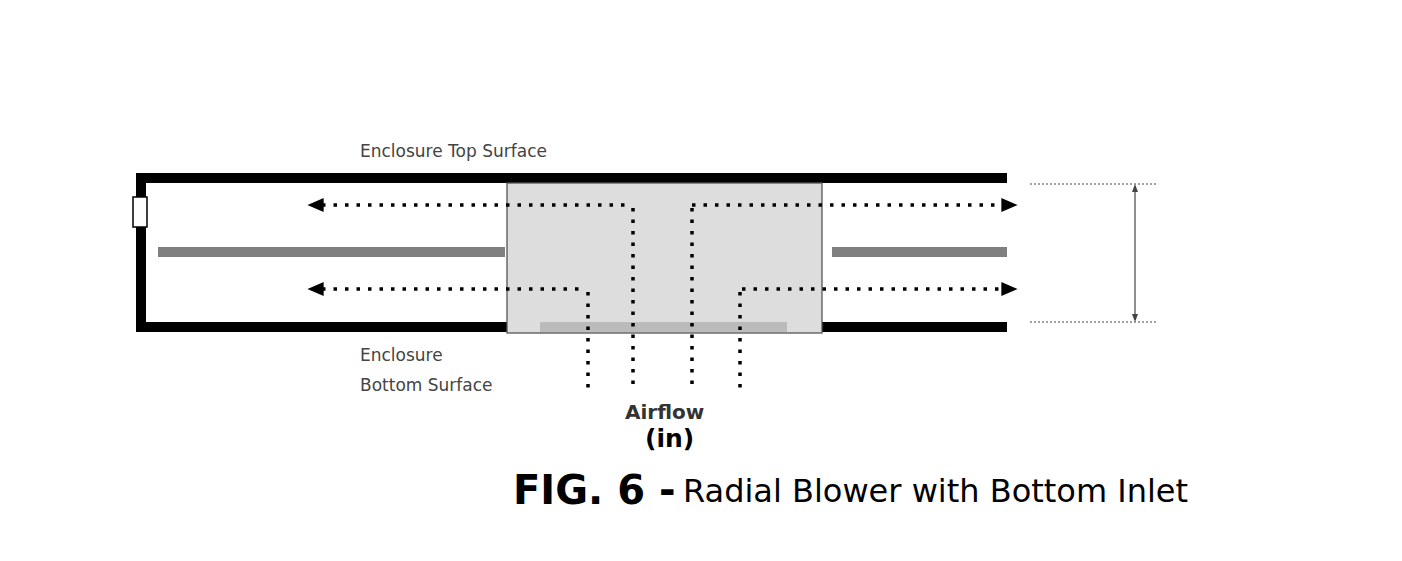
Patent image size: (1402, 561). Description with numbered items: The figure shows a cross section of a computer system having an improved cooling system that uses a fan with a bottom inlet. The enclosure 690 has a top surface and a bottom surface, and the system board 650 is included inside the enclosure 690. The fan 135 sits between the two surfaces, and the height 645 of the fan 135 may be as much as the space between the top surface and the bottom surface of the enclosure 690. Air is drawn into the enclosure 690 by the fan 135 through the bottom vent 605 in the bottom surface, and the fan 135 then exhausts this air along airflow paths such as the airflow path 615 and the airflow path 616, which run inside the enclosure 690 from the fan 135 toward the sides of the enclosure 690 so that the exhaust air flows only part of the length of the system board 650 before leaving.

The enclosure 690 is at (128, 280).
The system board 650 is at (208, 252).
The fan 135 is at (664, 258).
The bottom vent 605 is at (832, 371).
The airflow out (left) 616 is at (453, 247).
The airflow path 615 is at (895, 247).
The height of the fan 645 is at (1206, 253).